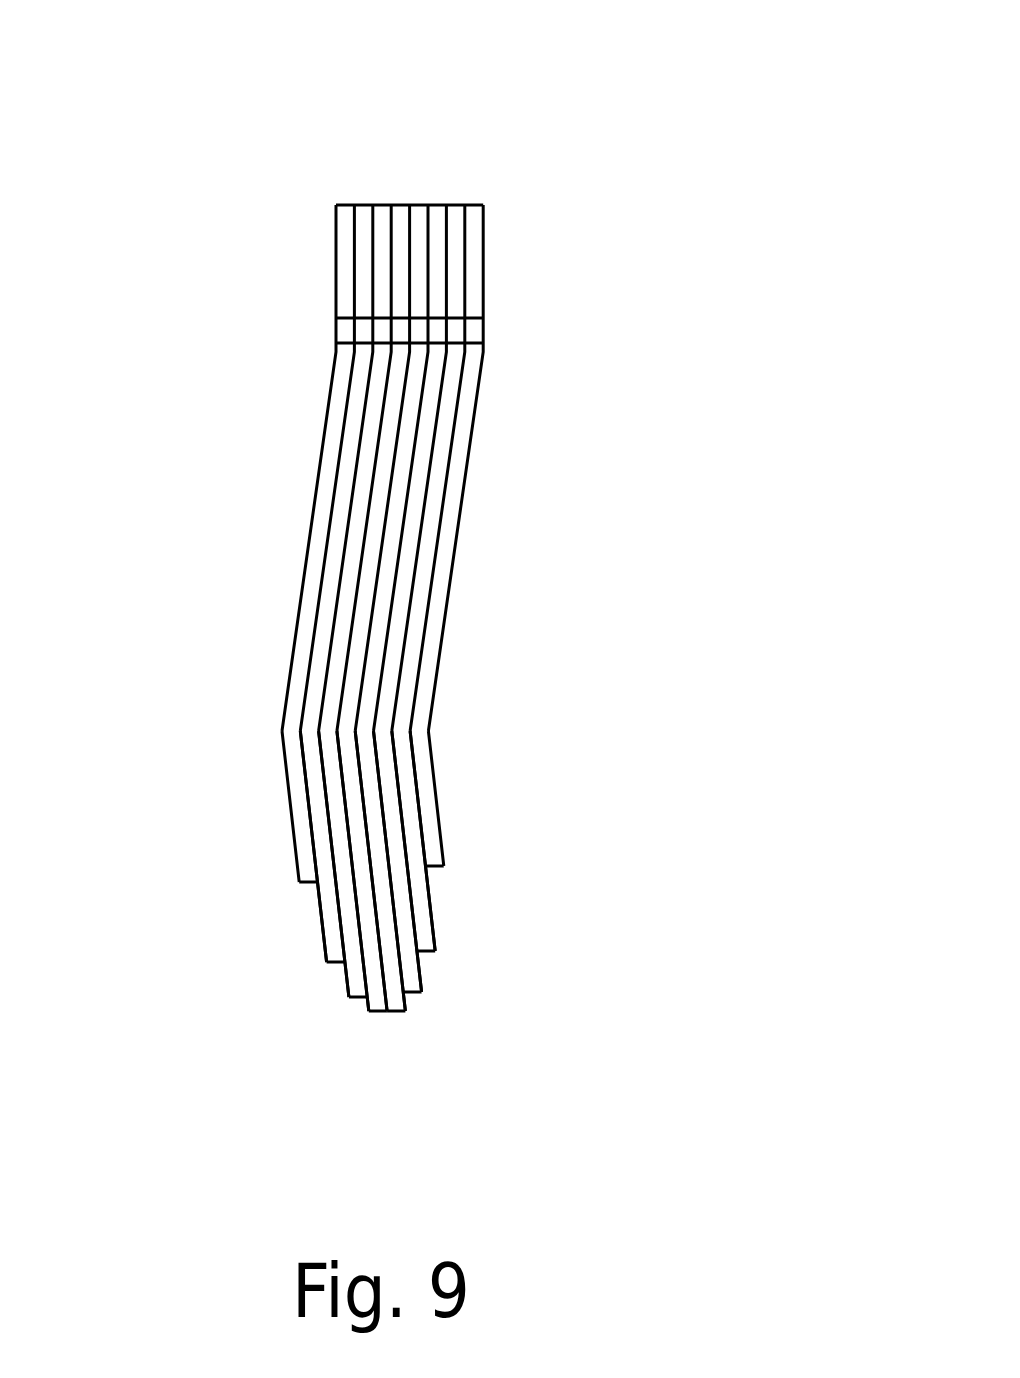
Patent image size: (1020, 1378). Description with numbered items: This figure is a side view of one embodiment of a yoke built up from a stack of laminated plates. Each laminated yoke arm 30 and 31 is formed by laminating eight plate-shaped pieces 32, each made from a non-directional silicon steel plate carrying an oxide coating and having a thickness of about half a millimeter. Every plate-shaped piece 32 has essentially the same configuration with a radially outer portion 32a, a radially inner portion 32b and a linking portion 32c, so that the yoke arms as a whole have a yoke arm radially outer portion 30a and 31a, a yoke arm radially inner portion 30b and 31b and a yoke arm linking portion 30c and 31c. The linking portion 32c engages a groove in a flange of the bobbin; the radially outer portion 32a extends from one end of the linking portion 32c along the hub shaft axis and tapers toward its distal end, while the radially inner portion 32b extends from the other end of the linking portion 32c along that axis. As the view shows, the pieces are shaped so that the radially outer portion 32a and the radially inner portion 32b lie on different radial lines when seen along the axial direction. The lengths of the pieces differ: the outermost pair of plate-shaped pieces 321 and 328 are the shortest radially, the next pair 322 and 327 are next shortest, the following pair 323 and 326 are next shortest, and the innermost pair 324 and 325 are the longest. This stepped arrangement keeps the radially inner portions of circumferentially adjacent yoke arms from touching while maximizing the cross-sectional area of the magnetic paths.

The laminated yoke arm 30 is at (370, 571).
The laminated yoke arm 31 is at (467, 158).
The plate-shaped piece 32 is at (340, 203).
The yoke arm radially outer portion 30a is at (385, 271).
The yoke arm radially outer portion 31a is at (318, 251).
The yoke arm radially inner portion 30b is at (345, 537).
The yoke arm radially inner portion 31b is at (298, 494).
The yoke arm linking portion 30c is at (342, 937).
The yoke arm linking portion 31c is at (268, 803).
The radially outer portion 32a is at (476, 230).
The radially inner portion 32b is at (420, 763).
The linking portion 32c is at (452, 530).
The plate-shaped piece 321 is at (303, 850).
The plate-shaped piece 322 is at (333, 928).
The plate-shaped piece 323 is at (356, 987).
The plate-shaped piece 324 is at (372, 1015).
The plate-shaped piece 325 is at (392, 1015).
The plate-shaped piece 326 is at (410, 982).
The plate-shaped piece 327 is at (423, 937).
The plate-shaped piece 328 is at (433, 843).